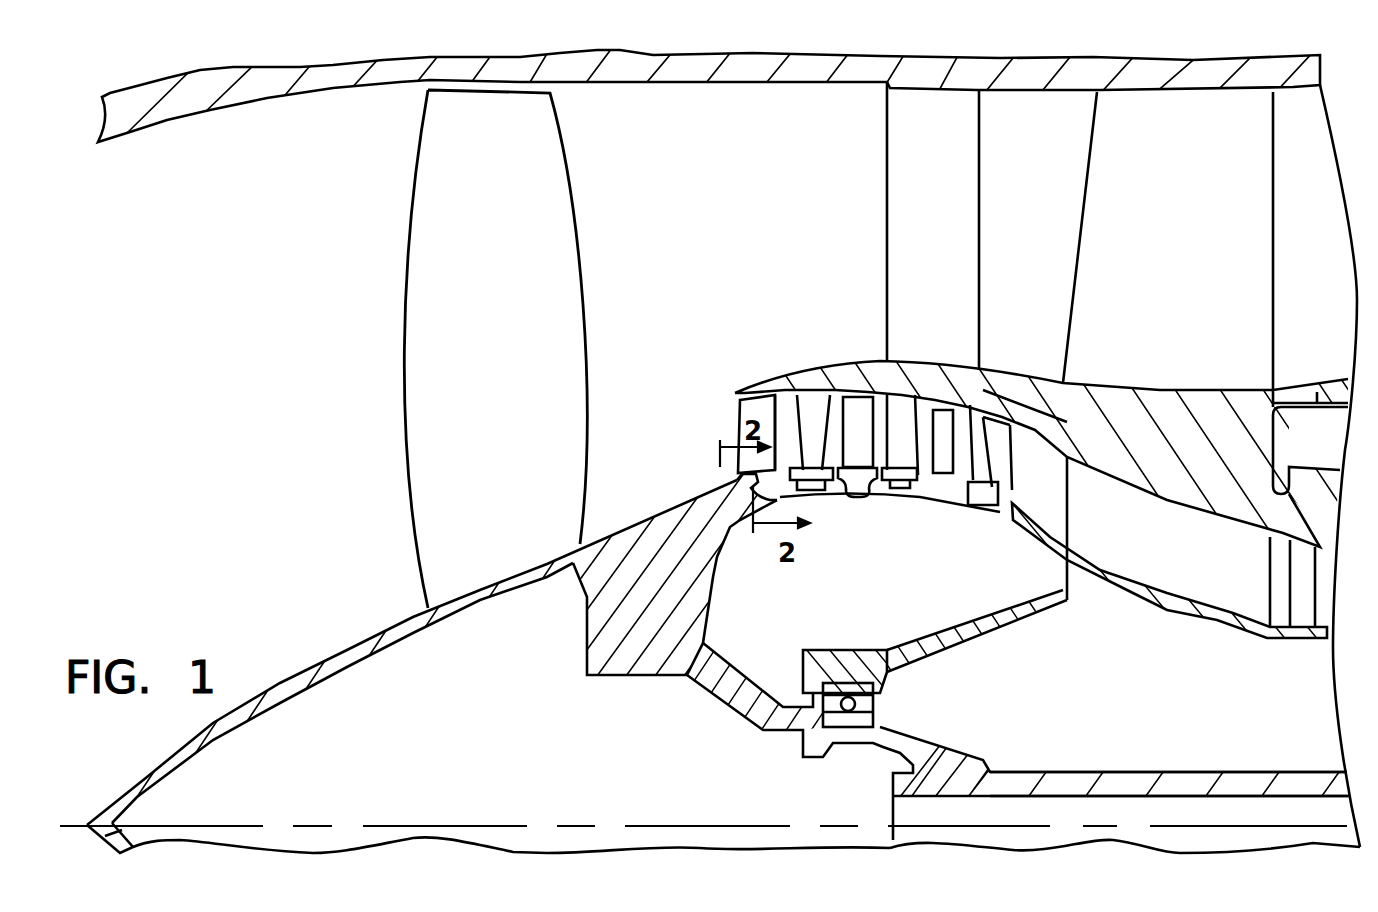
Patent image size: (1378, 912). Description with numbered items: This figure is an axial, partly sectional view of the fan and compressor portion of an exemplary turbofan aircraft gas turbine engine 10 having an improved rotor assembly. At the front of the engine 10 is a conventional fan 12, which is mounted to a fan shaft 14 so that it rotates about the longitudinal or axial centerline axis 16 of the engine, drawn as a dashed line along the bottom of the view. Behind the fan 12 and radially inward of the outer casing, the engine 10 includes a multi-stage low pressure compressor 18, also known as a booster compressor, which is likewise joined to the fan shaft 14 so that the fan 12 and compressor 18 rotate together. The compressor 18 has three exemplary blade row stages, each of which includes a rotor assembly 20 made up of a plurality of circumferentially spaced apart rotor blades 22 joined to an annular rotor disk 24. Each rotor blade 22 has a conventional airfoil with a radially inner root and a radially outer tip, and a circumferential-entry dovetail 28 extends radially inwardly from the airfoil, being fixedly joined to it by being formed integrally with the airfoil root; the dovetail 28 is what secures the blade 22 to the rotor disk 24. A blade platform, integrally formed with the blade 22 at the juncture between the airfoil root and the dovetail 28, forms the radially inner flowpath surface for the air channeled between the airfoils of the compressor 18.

The turbofan aircraft gas turbine engine 10 is at (868, 47).
The fan 12 is at (582, 192).
The fan shaft 14 is at (1143, 770).
The centerline axis 16 is at (481, 826).
The low pressure compressor 18 is at (861, 522).
The rotor assembly 20 is at (733, 405).
The rotor blades 22 is at (777, 400).
The rotor disk 24 is at (733, 525).
The circumferential-entry dovetail 28 is at (740, 478).